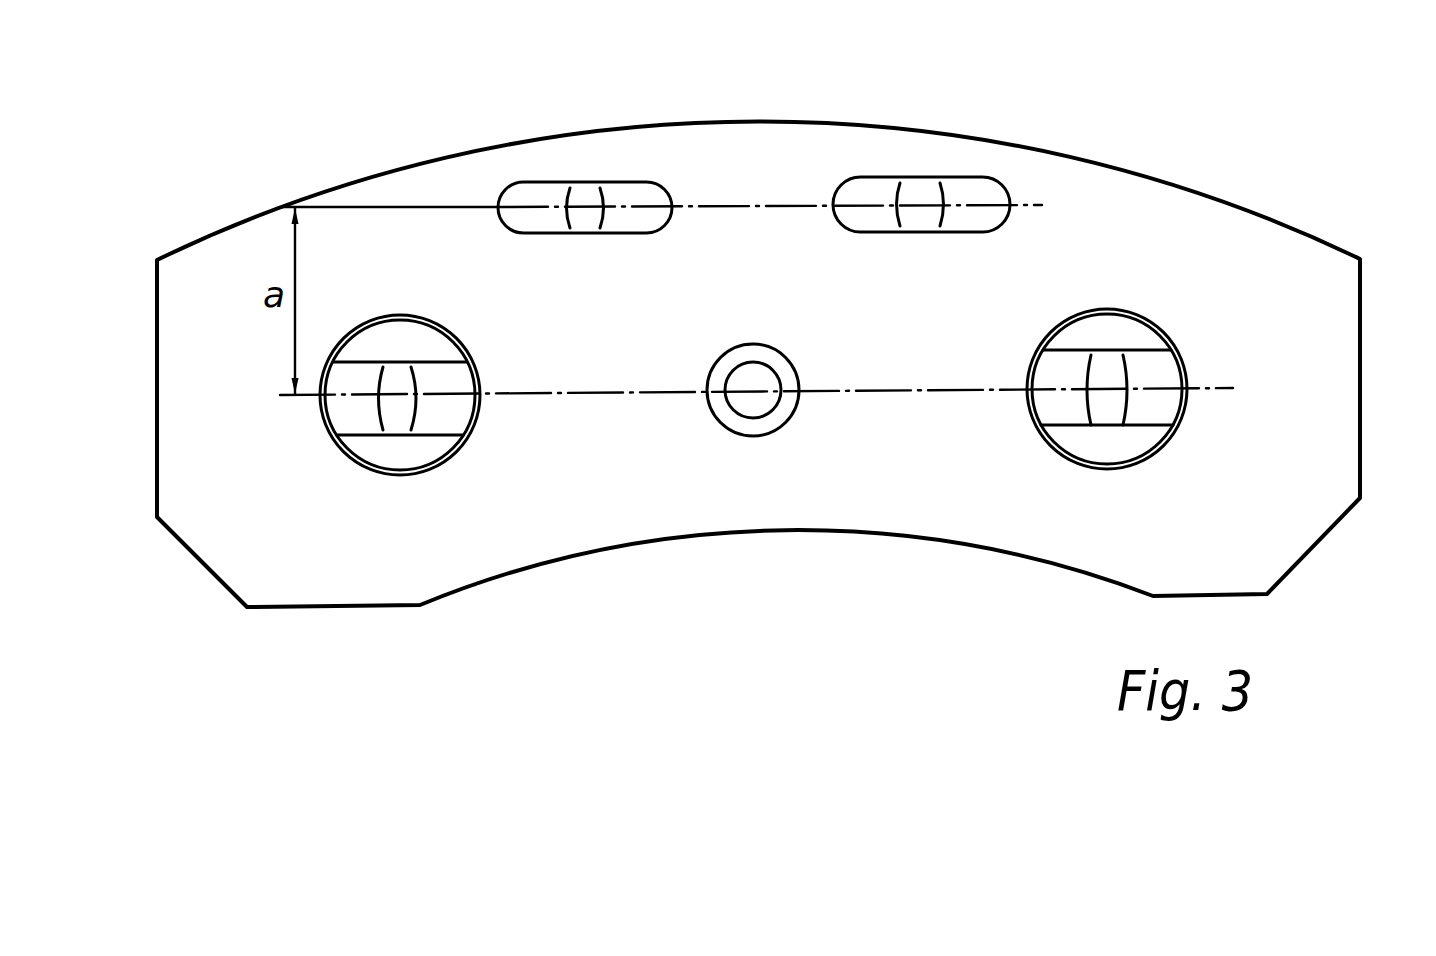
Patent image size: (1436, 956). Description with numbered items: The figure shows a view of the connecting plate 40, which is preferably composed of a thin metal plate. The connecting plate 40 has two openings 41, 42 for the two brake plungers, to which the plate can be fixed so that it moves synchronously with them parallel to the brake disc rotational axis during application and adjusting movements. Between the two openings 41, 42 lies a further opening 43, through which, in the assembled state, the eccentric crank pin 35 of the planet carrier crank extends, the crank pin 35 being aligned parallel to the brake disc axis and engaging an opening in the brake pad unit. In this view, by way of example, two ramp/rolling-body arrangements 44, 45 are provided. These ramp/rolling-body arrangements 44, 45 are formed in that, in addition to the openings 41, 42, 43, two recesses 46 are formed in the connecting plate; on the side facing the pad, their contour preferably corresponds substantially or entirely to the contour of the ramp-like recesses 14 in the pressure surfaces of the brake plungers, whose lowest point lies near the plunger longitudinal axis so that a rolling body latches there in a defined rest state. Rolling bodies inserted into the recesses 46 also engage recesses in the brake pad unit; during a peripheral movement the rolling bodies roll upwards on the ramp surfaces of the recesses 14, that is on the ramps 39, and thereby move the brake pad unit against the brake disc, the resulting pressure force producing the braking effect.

The connecting plate 40 is at (541, 128).
The ramp/rolling-body arrangement 44 is at (616, 168).
The ramp/rolling-body arrangement 45 is at (884, 168).
The recess 46 is at (558, 190).
The ramp-like recess 14 is at (419, 450).
The opening 41 is at (330, 455).
The opening 42 is at (1200, 381).
The ramp 39 is at (360, 415).
The further opening 43 is at (745, 450).
The crank pin 35 is at (772, 410).